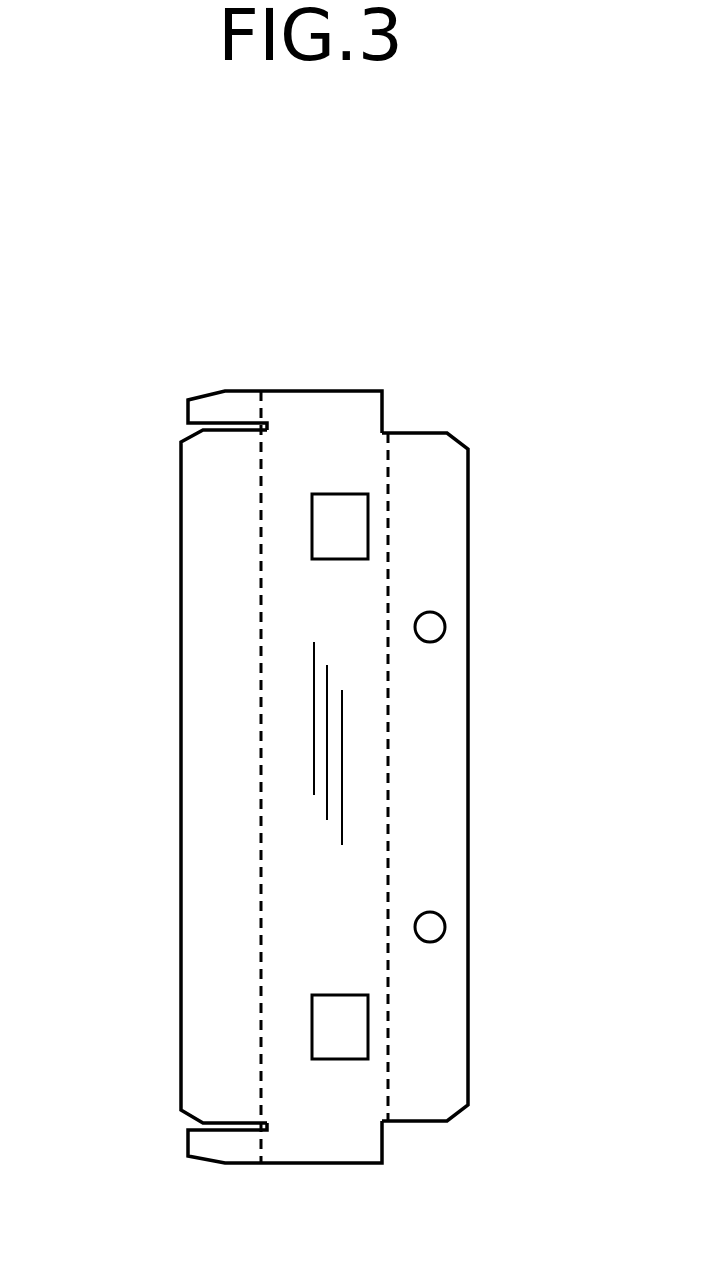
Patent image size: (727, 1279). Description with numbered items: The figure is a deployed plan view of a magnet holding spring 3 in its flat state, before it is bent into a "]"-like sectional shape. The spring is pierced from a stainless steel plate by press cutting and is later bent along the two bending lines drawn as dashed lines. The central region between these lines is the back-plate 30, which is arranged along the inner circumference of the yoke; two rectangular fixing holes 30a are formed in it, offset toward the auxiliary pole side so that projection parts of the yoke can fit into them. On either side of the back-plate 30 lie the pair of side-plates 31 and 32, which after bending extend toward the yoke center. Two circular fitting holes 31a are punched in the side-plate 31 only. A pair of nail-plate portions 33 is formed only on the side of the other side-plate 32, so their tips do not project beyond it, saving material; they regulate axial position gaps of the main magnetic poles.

The magnet holding spring 3 is at (428, 374).
The back-plate 30 is at (328, 777).
The fixing holes 30a is at (353, 527).
The side-plate 31 is at (491, 777).
The fitting holes 31a is at (432, 627).
The side-plate 32 is at (222, 745).
The nail-plate portion 33 is at (225, 405).